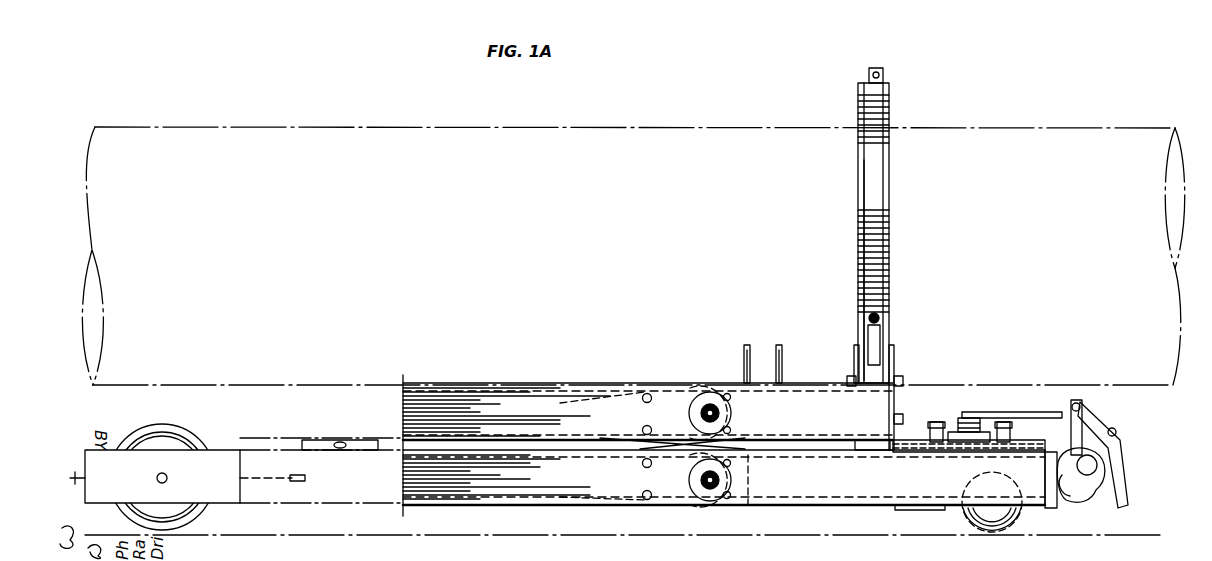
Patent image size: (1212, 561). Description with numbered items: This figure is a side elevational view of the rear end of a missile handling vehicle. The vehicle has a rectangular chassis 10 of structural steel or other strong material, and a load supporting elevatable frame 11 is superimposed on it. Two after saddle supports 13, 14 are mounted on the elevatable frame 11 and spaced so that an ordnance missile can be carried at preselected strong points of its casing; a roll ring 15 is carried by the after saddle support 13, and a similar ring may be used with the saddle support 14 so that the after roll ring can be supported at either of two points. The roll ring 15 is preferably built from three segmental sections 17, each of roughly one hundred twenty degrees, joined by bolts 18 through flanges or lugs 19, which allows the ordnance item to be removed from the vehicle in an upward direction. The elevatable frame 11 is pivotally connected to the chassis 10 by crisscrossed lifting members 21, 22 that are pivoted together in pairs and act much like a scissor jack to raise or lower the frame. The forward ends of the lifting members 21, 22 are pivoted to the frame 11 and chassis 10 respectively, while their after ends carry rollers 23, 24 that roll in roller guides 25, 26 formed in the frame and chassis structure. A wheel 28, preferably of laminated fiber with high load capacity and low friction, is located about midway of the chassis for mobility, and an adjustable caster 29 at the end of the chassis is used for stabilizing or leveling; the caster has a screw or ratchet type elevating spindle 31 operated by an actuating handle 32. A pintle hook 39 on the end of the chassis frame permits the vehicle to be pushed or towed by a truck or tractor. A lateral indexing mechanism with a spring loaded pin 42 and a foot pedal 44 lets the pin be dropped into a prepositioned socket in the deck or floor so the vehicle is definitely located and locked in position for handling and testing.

The chassis 10 is at (465, 507).
The elevatable frame 11 is at (445, 383).
The after saddle support 13 is at (859, 348).
The after saddle support 14 is at (747, 345).
The roll ring 15 is at (890, 109).
The segmental section 17 is at (877, 184).
The bolt 18 is at (884, 76).
The flange or lug 19 is at (879, 69).
The lifting member 21 is at (638, 452).
The lifting member 22 is at (631, 394).
The roller 23 is at (689, 494).
The roller 24 is at (689, 394).
The roller guide 25 is at (748, 506).
The roller guide 26 is at (603, 392).
The wheel 28 is at (202, 512).
The adjustable caster 29 is at (978, 531).
The elevating spindle 31 is at (958, 416).
The actuating handle 32 is at (1013, 411).
The pintle hook 39 is at (1093, 486).
The spring loaded pin 42 is at (1078, 399).
The foot pedal 44 is at (1122, 448).